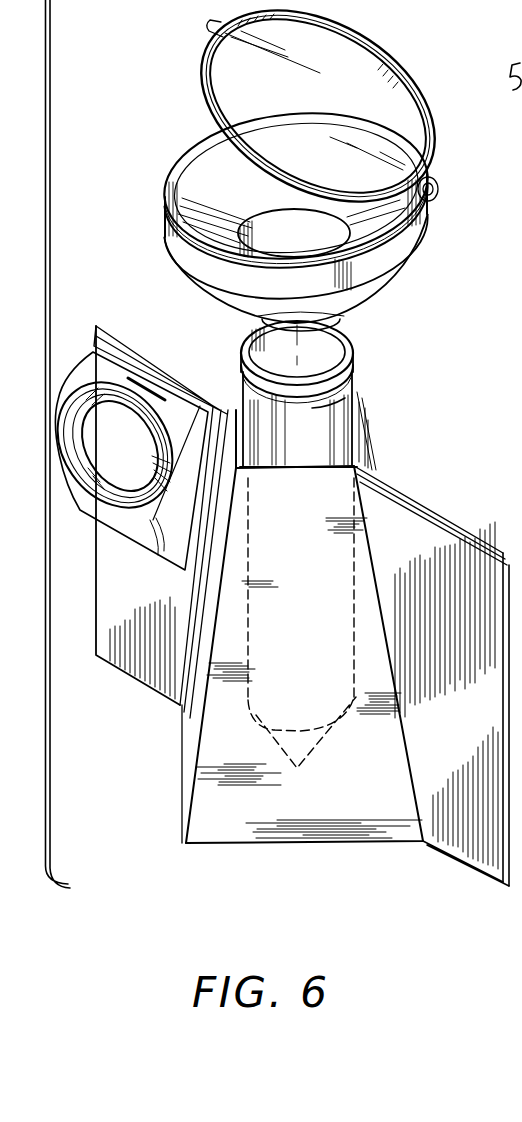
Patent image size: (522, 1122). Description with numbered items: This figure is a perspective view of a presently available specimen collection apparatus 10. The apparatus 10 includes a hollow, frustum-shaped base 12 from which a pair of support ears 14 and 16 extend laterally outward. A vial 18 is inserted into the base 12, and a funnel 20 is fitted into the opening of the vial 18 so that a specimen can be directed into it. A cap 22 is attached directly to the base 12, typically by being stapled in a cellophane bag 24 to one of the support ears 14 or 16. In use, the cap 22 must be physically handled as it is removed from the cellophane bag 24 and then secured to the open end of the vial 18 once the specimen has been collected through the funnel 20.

The apparatus 10 is at (46, 388).
The base 12 is at (372, 424).
The support ear 14 is at (148, 658).
The support ear 16 is at (468, 838).
The vial 18 is at (358, 348).
The funnel 20 is at (421, 221).
The cap 22 is at (115, 402).
The cellophane bag 24 is at (172, 405).